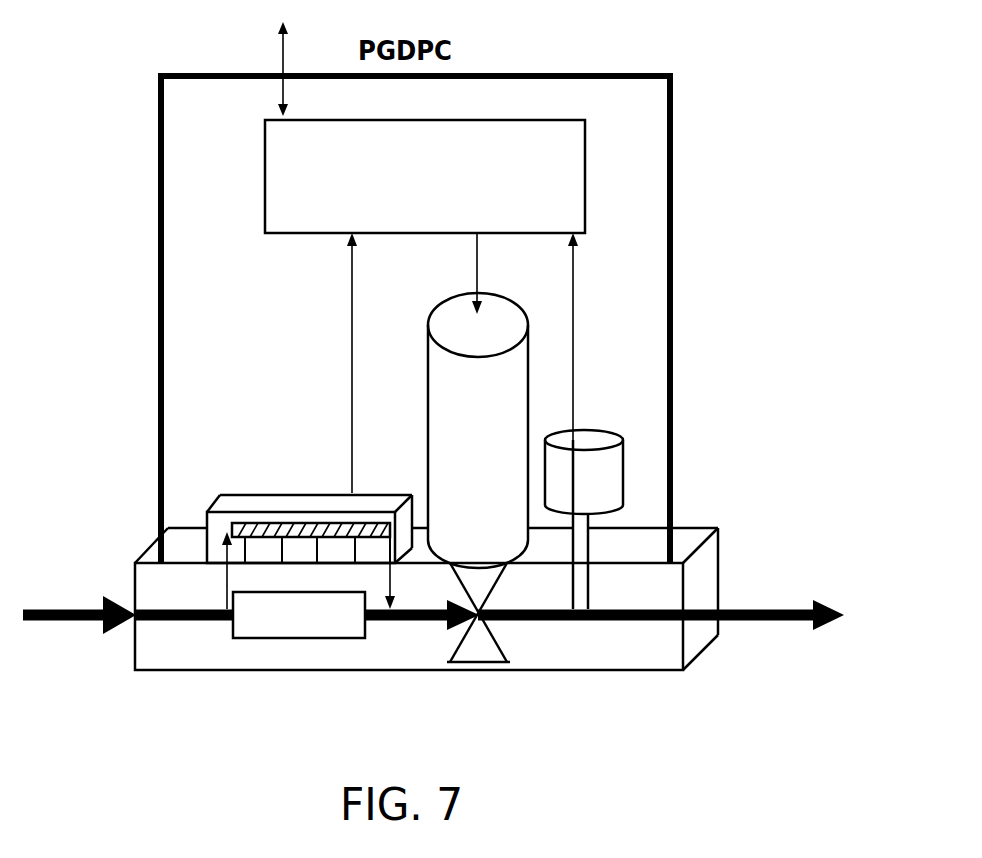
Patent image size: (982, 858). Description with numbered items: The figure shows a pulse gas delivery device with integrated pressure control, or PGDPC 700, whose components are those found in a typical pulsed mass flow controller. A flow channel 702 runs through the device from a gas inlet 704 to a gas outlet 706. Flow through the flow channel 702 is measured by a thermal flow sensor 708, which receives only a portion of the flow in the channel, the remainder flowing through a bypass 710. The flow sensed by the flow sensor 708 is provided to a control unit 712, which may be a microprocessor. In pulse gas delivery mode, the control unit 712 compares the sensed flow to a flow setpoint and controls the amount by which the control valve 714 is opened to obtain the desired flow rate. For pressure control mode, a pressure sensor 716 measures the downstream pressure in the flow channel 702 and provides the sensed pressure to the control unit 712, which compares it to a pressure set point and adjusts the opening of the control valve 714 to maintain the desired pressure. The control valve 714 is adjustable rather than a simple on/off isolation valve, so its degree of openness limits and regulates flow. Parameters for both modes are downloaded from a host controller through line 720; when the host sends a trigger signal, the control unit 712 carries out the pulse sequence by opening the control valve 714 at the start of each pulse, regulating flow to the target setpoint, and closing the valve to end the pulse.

The pulse gas delivery device with integrated pressure control (PGDPC) 700 is at (673, 251).
The flow channel 702 is at (613, 623).
The gas inlet 704 is at (55, 622).
The gas outlet 706 is at (806, 626).
The thermal flow sensor 708 is at (317, 493).
The bypass 710 is at (367, 632).
The control unit 712 is at (307, 235).
The control valve 714 is at (443, 303).
The pressure sensor 716 is at (607, 428).
The line 720 is at (281, 47).